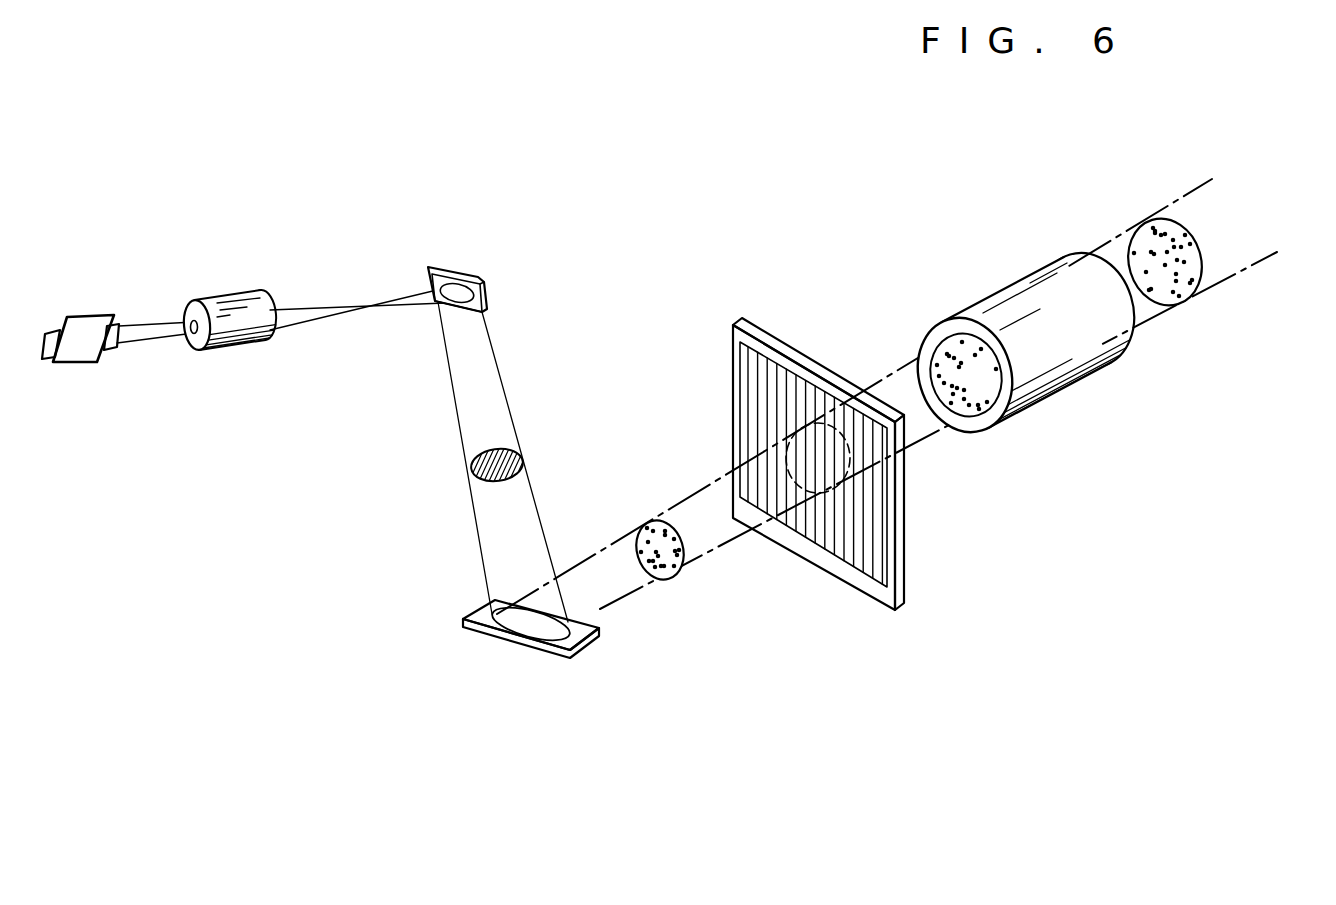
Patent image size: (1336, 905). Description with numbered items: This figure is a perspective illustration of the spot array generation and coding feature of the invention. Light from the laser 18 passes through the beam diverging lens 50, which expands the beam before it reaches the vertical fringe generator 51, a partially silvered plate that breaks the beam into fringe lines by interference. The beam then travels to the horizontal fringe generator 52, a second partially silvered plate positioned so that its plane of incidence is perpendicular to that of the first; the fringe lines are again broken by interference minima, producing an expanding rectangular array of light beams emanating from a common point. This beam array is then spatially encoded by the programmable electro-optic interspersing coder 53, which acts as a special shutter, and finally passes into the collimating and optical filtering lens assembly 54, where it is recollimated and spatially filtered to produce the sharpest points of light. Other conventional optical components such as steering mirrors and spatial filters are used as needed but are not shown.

The laser 18 is at (75, 361).
The beam diverging lens 50 is at (233, 348).
The vertical fringe generator 51 is at (488, 297).
The horizontal fringe generator 52 is at (570, 658).
The programmable electro-optic interspersing coder 53 is at (904, 573).
The collimating and optical filtering lens assembly 54 is at (1037, 403).